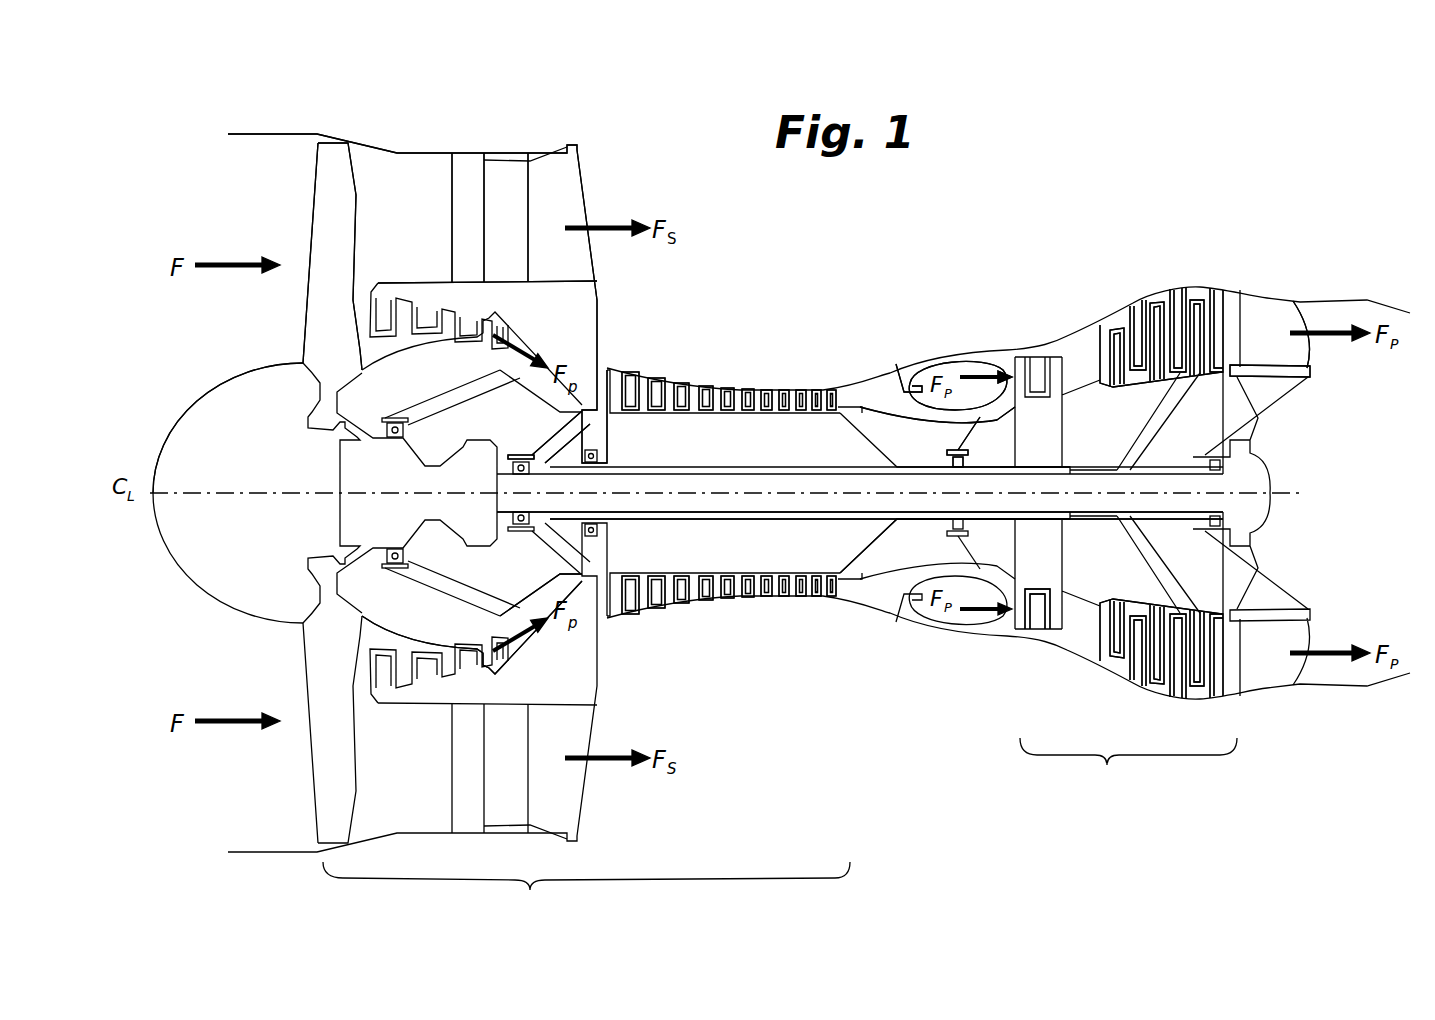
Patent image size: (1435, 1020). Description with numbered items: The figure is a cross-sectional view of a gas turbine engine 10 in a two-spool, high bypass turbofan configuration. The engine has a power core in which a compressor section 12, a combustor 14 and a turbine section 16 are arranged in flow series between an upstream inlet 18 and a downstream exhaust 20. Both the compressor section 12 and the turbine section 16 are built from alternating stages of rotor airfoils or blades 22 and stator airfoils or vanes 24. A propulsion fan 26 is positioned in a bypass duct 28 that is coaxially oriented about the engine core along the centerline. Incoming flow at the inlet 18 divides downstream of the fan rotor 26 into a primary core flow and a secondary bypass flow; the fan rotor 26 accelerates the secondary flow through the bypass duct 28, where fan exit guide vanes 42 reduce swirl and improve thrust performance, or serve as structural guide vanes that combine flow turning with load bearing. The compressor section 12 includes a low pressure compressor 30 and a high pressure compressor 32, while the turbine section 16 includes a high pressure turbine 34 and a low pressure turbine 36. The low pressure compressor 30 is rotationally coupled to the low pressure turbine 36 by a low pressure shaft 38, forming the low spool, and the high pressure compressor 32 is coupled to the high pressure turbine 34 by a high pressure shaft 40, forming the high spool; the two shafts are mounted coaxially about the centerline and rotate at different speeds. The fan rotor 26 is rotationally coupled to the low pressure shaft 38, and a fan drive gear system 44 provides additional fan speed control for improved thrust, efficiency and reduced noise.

The gas turbine engine 10 is at (198, 107).
The compressor section 12 is at (586, 890).
The combustor 14 is at (957, 362).
The turbine section 16 is at (1128, 767).
The upstream inlet 18 is at (228, 416).
The downstream exhaust 20 is at (1295, 371).
The rotor airfoils 22 is at (653, 387).
The stator airfoils 24 is at (693, 387).
The propulsion fan 26 is at (323, 222).
The bypass duct 28 is at (487, 241).
The low pressure compressor 30 is at (545, 660).
The high pressure compressor 32 is at (742, 613).
The high pressure turbine 34 is at (1052, 645).
The low pressure turbine 36 is at (1122, 688).
The low pressure shaft 38 is at (778, 505).
The high pressure shaft 40 is at (866, 530).
The fan exit guide vanes 42 is at (462, 167).
The fan drive gear system 44 is at (487, 437).